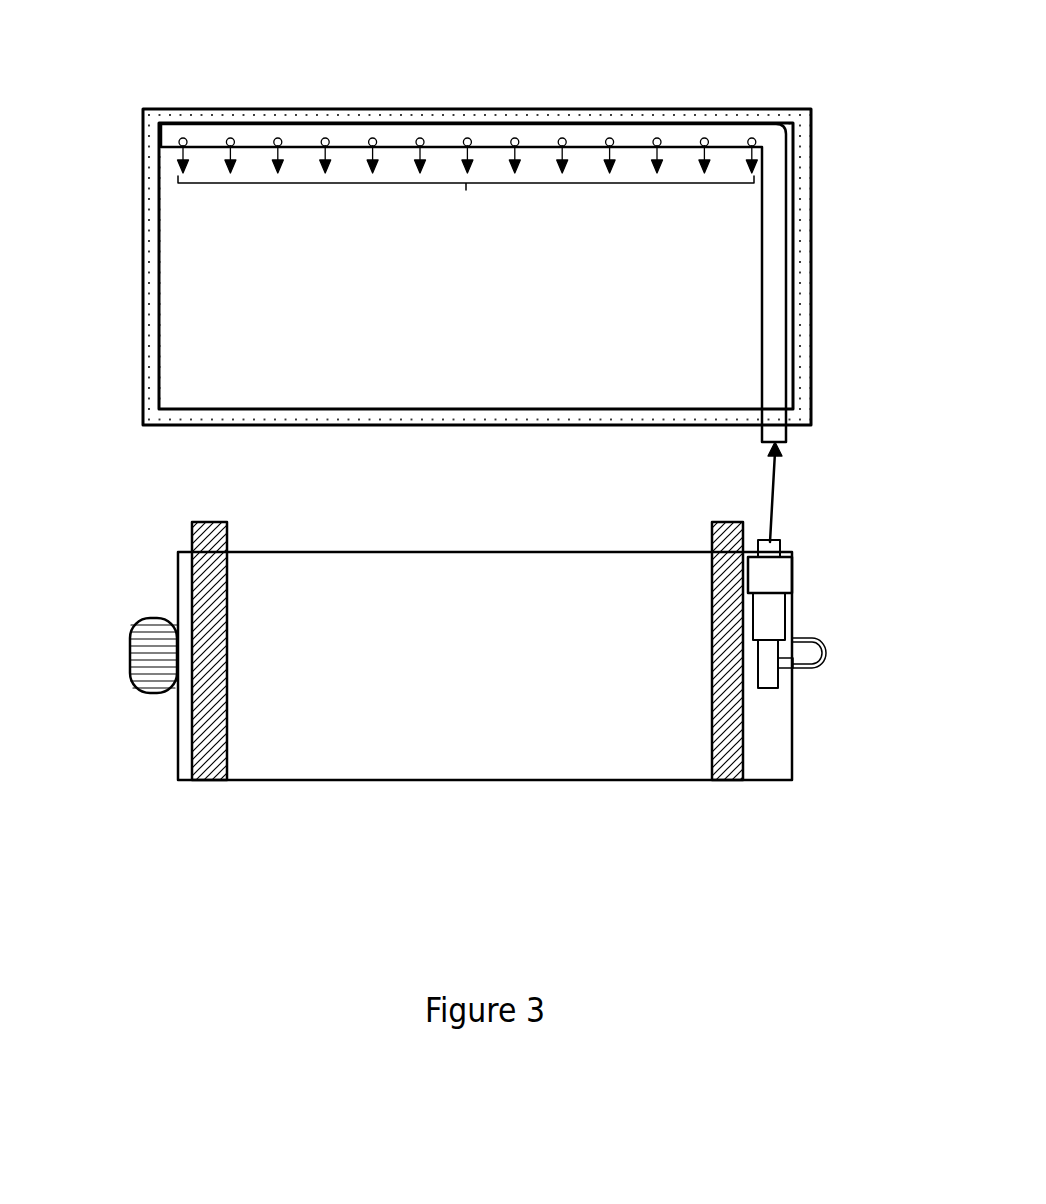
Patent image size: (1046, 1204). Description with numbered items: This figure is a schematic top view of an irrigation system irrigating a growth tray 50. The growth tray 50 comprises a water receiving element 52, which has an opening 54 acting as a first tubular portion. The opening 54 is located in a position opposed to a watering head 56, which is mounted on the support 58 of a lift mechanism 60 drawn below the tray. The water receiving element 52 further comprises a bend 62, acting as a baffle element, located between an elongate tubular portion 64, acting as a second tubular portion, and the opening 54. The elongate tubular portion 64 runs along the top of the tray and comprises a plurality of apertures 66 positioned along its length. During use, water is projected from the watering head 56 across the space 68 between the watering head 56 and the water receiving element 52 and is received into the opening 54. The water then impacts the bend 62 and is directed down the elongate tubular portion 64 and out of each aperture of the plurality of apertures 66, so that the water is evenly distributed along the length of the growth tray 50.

The growth tray 50 is at (142, 182).
The water receiving element 52 is at (779, 238).
The opening 54 is at (781, 440).
The watering head 56 is at (778, 550).
The support 58 is at (507, 661).
The lift mechanism 60 is at (120, 515).
The bend 62 is at (781, 120).
The elongate tubular portion 64 is at (297, 411).
The plurality of apertures 66 is at (468, 187).
The space 68 is at (822, 442).